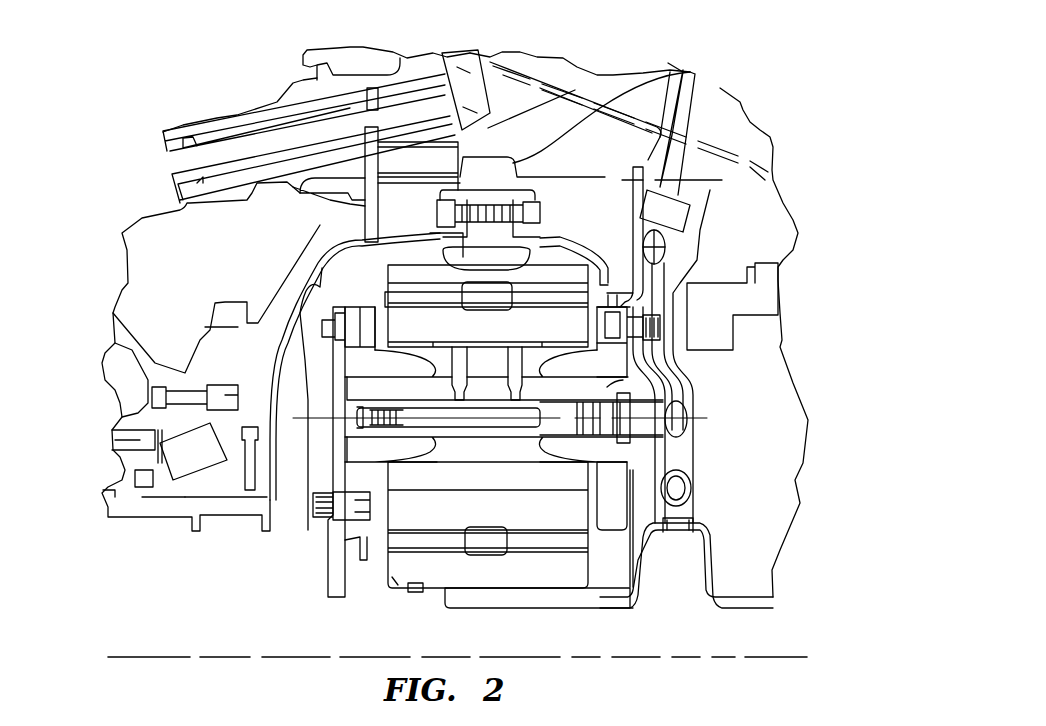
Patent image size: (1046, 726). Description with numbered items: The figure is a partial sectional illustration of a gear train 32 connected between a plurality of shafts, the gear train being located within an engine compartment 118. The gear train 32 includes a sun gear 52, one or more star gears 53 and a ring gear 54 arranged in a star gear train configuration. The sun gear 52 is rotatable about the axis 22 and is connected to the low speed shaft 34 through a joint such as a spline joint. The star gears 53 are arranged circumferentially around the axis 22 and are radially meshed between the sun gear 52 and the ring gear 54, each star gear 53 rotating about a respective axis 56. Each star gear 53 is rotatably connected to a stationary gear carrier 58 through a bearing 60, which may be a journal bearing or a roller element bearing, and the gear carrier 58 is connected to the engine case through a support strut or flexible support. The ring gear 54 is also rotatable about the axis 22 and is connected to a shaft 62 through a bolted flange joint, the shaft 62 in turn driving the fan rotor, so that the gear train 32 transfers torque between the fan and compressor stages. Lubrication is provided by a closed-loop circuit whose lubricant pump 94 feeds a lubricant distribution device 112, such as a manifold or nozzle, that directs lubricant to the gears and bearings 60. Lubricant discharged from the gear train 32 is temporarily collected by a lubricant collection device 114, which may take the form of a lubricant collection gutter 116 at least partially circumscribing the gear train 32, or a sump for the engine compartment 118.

The axis 22 is at (124, 655).
The gear train 32 is at (297, 573).
The low speed shaft 34 is at (755, 605).
The sun gear 52 is at (395, 578).
The star gear 53 is at (565, 513).
The ring gear 54 is at (565, 273).
The axis 56 is at (700, 418).
The stationary gear carrier 58 is at (327, 606).
The bearing 60 is at (613, 385).
The shaft 62 is at (110, 519).
The lubricant pump 94 is at (352, 298).
The lubricant distribution device 112 is at (693, 483).
The lubricant collection device 114 is at (655, 100).
The lubricant collection gutter 116 is at (732, 306).
The engine compartment 118 is at (254, 571).